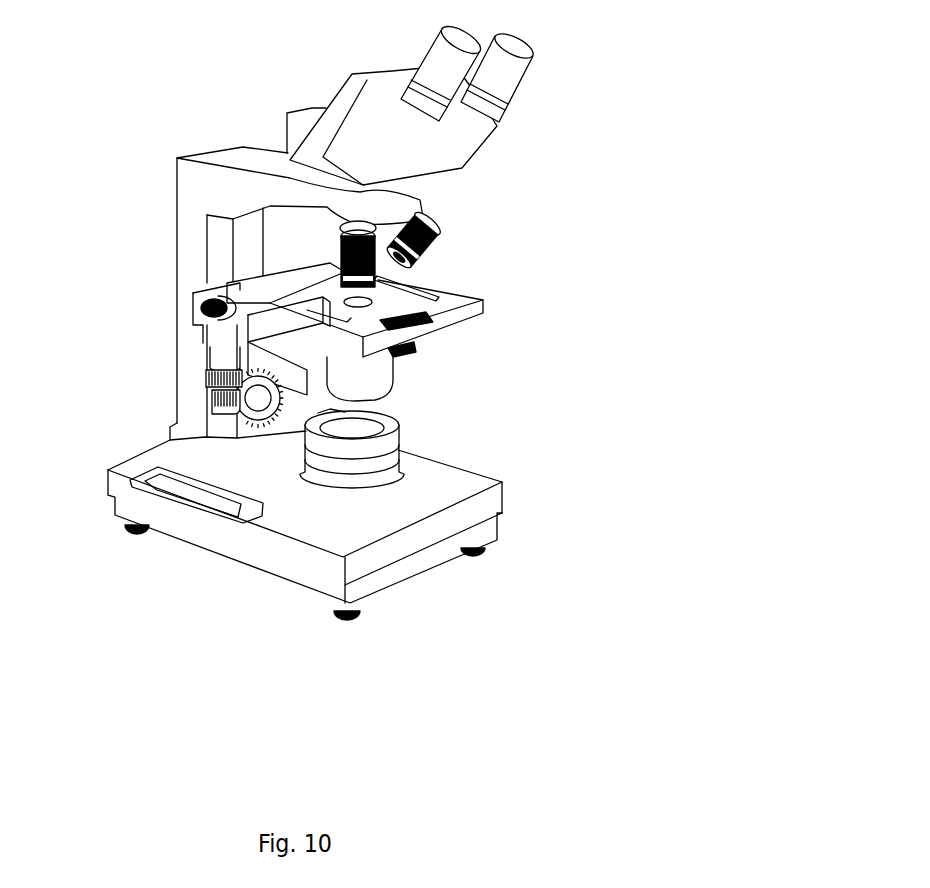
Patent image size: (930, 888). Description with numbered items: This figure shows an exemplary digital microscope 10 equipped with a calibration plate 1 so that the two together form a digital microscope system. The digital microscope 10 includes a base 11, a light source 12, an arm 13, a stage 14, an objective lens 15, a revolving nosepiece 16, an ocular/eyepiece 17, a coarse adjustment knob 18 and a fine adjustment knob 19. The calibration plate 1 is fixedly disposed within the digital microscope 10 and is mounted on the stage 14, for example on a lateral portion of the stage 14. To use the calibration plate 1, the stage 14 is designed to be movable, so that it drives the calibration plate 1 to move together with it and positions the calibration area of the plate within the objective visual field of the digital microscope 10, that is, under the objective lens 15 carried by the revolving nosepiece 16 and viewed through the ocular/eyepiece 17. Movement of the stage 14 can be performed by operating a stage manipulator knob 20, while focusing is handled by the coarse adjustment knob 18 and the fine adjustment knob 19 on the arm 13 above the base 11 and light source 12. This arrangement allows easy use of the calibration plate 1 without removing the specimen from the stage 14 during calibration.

The digital microscope 10 is at (235, 108).
The base 11 is at (489, 498).
The light source 12 is at (385, 437).
The arm 13 is at (210, 193).
The stage 14 is at (208, 308).
The objective lens 15 is at (449, 248).
The revolving nosepiece 16 is at (412, 196).
The ocular/eyepiece 17 is at (434, 65).
The coarse adjustment knob 18 is at (260, 402).
The fine adjustment knob 19 is at (219, 412).
The stage manipulator knob 20 is at (205, 374).
The calibration plate 1 is at (442, 316).